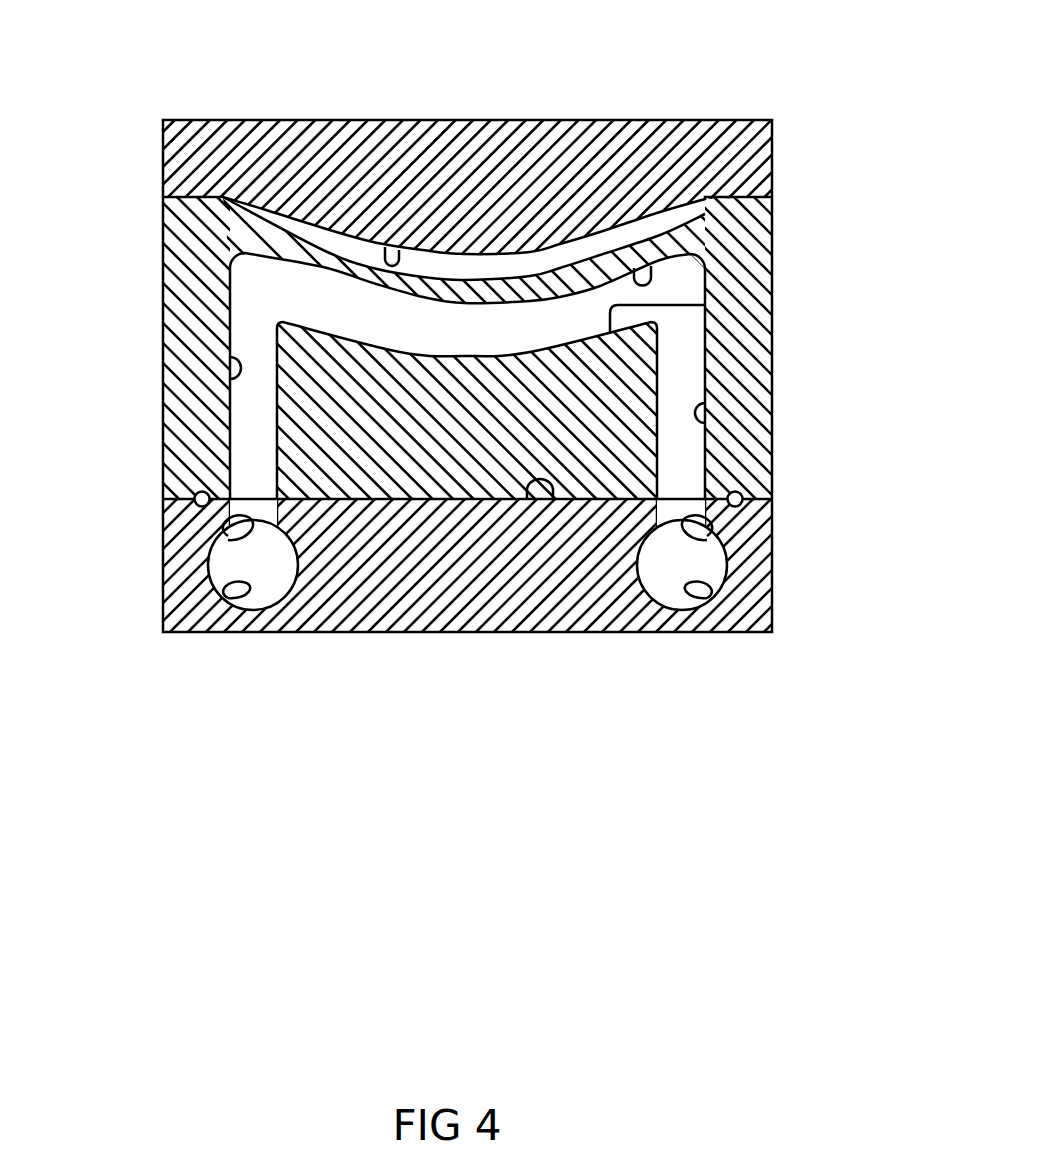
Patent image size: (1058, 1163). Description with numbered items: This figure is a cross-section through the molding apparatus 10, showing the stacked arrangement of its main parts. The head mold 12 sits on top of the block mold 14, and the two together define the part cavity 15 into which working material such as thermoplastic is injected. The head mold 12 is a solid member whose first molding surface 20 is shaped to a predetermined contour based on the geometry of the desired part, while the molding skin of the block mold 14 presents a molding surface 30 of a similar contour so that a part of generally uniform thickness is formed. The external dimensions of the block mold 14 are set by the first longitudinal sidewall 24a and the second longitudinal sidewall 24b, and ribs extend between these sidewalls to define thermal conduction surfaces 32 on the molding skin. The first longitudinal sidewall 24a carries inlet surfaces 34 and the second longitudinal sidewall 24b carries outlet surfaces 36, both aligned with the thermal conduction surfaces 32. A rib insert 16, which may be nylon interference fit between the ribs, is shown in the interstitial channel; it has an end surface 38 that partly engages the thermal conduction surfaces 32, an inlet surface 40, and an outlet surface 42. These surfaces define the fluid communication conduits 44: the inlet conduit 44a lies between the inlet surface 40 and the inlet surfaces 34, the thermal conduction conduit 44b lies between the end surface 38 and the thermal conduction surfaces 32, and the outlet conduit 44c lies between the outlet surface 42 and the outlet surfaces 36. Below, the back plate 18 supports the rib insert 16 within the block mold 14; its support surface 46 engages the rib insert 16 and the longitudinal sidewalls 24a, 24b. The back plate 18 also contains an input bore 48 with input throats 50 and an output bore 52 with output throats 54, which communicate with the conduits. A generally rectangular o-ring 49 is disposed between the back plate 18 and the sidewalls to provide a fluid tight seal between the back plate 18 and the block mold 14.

The molding apparatus 10 is at (805, 50).
The head mold 12 is at (197, 168).
The block mold 14 is at (183, 416).
The part cavity 15 is at (447, 263).
The rib inserts 16 is at (447, 433).
The back plate 18 is at (203, 618).
The first molding surface 20 is at (392, 248).
The first longitudinal sidewall 24a is at (772, 232).
The second longitudinal sidewall 24b is at (163, 232).
The molding surface 30 is at (311, 246).
The thermal conduction surfaces 32 is at (650, 268).
The inlet surfaces 34 is at (705, 415).
The outlet surfaces 36 is at (232, 364).
The end surface 38 is at (705, 305).
The inlet surface 40 is at (658, 457).
The outlet surface 42 is at (240, 452).
The fluid communication conduits 44 is at (418, 342).
The inlet conduit 44a is at (693, 363).
The thermal conduction conduit 44b is at (536, 324).
The outlet conduit 44c is at (241, 322).
The support surface 46 is at (538, 500).
The input bore 48 is at (707, 598).
The o-ring 49 is at (195, 499).
The input throats 50 is at (707, 540).
The output bore 52 is at (228, 598).
The output throats 54 is at (228, 540).